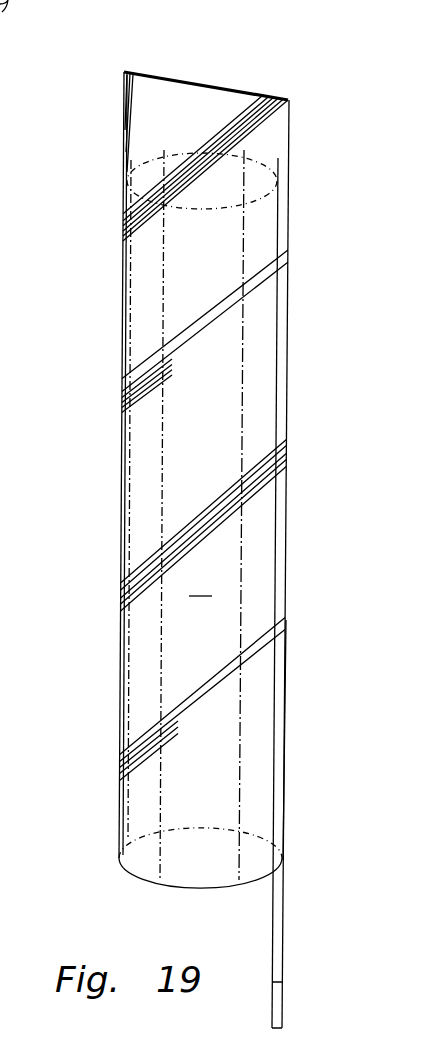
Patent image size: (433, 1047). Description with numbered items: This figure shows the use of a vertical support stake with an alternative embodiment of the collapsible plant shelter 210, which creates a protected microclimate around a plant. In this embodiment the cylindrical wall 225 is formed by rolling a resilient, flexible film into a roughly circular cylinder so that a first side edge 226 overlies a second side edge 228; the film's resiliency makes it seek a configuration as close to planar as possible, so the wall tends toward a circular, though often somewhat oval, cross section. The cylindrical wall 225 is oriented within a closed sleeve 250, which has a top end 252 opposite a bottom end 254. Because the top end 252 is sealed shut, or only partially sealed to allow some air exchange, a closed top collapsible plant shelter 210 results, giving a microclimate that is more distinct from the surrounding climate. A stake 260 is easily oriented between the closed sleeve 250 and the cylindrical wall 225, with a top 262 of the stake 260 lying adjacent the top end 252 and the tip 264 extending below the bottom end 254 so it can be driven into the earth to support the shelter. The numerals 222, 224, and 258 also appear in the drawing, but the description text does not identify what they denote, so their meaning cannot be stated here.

The collapsible plant shelter 210 is at (308, 65).
The tubular body 222 is at (243, 156).
The bottom end of tubular body 224 is at (255, 838).
The cylindrical wall 225 is at (258, 405).
The first side edge 226 is at (163, 347).
The second side edge 228 is at (242, 351).
The closed sleeve 250 is at (123, 254).
The top end 252 is at (162, 75).
The bottom end 254 is at (145, 883).
The side wall 258 is at (135, 690).
The stake 260 is at (282, 668).
The top of the stake 262 is at (285, 190).
The tip 264 is at (282, 1005).